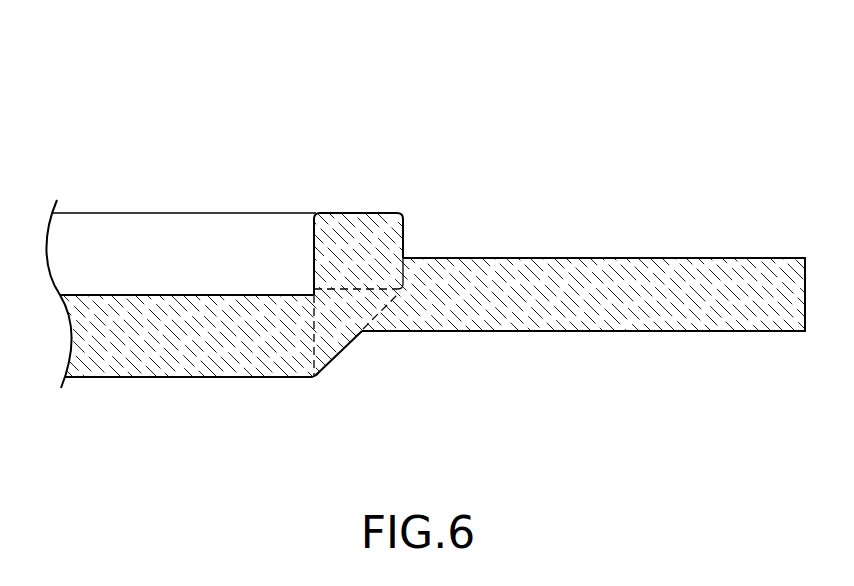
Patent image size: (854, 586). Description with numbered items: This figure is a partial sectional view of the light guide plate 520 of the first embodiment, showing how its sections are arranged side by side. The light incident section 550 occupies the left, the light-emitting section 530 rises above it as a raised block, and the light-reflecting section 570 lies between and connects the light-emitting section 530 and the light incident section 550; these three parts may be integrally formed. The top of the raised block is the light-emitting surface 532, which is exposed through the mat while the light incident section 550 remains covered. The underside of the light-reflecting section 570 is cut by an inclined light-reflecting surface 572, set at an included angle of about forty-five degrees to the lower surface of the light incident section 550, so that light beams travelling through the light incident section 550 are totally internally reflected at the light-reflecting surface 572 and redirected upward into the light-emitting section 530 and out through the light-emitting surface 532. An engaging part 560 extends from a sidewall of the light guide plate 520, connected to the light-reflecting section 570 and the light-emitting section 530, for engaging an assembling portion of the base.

The light guide plate 520 is at (338, 57).
The light-emitting section 530 is at (372, 238).
The light-emitting surface 532 is at (338, 210).
The light incident section 550 is at (143, 348).
The engaging part 560 is at (582, 280).
The light-reflecting section 570 is at (335, 320).
The light-reflecting surface 572 is at (342, 350).